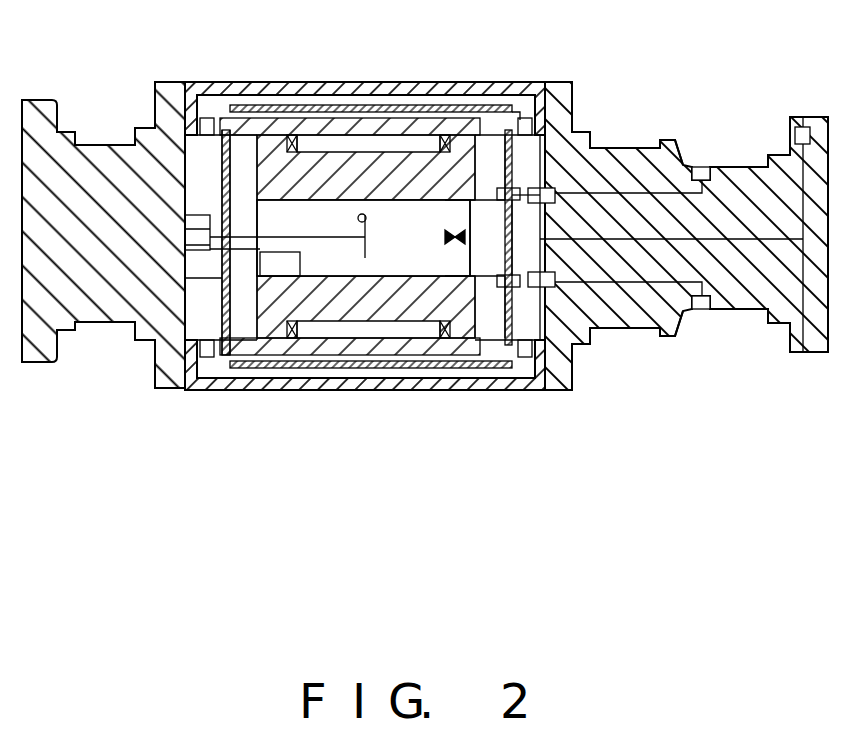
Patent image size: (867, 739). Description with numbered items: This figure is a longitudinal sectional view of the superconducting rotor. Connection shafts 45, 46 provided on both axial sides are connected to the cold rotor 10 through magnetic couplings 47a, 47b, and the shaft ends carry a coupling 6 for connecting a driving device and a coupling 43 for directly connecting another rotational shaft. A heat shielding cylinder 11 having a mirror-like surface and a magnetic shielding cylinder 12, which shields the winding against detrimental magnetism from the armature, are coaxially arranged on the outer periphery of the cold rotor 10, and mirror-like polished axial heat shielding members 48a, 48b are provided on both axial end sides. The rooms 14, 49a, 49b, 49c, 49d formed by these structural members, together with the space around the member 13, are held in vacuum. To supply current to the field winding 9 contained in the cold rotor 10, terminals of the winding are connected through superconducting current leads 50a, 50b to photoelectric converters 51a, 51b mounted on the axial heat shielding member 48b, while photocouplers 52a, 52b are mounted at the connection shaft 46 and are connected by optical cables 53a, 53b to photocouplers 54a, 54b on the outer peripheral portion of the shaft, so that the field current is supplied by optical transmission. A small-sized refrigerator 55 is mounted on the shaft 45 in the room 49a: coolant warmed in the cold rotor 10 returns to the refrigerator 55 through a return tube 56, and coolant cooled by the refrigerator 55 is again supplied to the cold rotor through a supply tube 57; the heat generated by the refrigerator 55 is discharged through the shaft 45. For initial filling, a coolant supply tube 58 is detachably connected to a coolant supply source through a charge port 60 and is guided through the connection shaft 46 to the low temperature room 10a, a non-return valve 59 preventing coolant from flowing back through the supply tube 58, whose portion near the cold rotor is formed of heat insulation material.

The coupling 6 is at (22, 362).
The connection shaft 45 is at (106, 148).
The connection shaft 46 is at (823, 346).
The coolant supply tube 58 is at (828, 158).
The coupling 43 is at (808, 116).
The charge port 60 is at (795, 136).
The photocoupler 54a is at (707, 167).
The photocoupler 54b is at (746, 319).
The optical cable 53a is at (634, 190).
The optical cable 53b is at (689, 318).
The photocoupler 52a is at (579, 140).
The photocoupler 52b is at (575, 348).
The room 49c is at (575, 346).
The magnetic shielding cylinder 12 is at (238, 82).
The room 14 is at (300, 108).
The field winding 9 is at (360, 122).
The cold rotor 10 is at (417, 112).
The low temperature room 10a is at (337, 212).
The heat shielding cylinder 11 is at (466, 112).
The room 49a is at (196, 154).
The room 49b is at (243, 328).
The magnetic coupling 47a is at (205, 356).
The small-sized refrigerator 55 is at (200, 214).
The return tube 56 is at (301, 260).
The supply tube 57 is at (379, 230).
The non-return valve 59 is at (445, 237).
The current lead 50a is at (497, 196).
The current lead 50b is at (497, 282).
The partition plate 13 is at (513, 195).
The photoelectric converter 51a is at (492, 170).
The photoelectric converter 51b is at (452, 333).
The room 49d is at (495, 332).
The magnetic coupling 47b is at (520, 363).
The axial heat shielding member 48a is at (222, 280).
The axial heat shielding member 48b is at (547, 188).